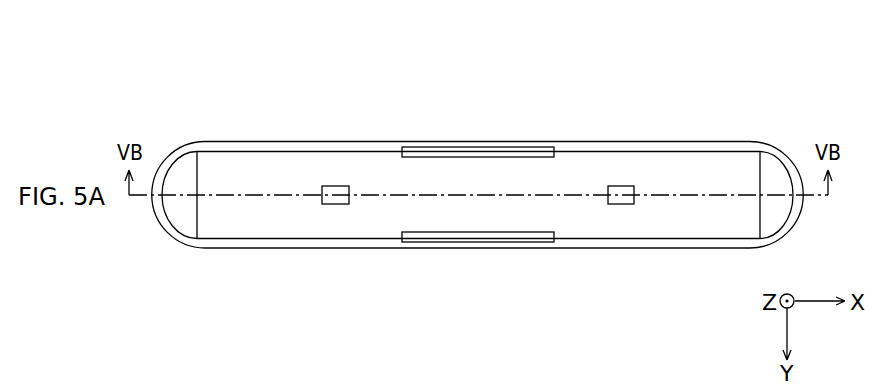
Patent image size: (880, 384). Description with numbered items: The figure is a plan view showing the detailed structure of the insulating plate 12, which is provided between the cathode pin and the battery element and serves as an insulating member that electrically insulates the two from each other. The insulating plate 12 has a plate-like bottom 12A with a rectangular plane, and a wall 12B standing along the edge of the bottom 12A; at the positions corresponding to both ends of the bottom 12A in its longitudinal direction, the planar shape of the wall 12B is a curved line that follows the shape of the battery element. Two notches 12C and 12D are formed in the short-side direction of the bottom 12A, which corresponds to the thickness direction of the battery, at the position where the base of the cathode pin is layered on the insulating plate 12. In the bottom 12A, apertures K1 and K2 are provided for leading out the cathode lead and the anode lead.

The insulating plate 12 is at (607, 39).
The bottom 12A is at (677, 185).
The wall 12B is at (745, 142).
The notch 12C is at (448, 148).
The notch 12D is at (447, 242).
The aperture K1 is at (333, 186).
The aperture K2 is at (621, 186).